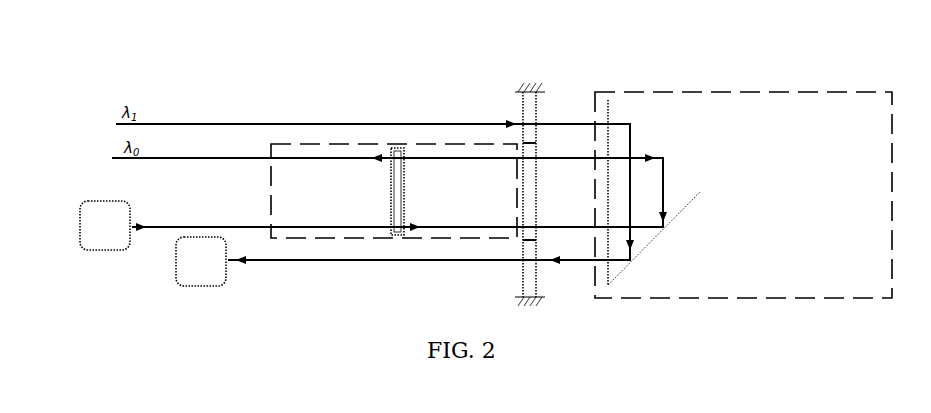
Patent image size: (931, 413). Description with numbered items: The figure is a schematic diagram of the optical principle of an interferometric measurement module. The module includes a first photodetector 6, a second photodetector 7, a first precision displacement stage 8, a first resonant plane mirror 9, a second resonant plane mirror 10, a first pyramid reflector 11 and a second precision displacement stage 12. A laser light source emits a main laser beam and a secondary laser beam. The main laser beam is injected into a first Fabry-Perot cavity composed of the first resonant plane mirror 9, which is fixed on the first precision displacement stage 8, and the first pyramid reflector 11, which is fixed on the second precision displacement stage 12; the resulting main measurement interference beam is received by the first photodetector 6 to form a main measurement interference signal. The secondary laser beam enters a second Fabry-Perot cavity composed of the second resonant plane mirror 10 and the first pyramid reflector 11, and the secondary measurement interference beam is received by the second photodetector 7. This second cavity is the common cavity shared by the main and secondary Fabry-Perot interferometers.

The first photodetector 6 is at (105, 200).
The second photodetector 7 is at (200, 236).
The first precision displacement stage 8 is at (272, 145).
The first resonant plane mirror 9 is at (395, 148).
The second resonant plane mirror 10 is at (529, 88).
The first pyramid reflector 11 is at (689, 186).
The second precision displacement stage 12 is at (766, 90).